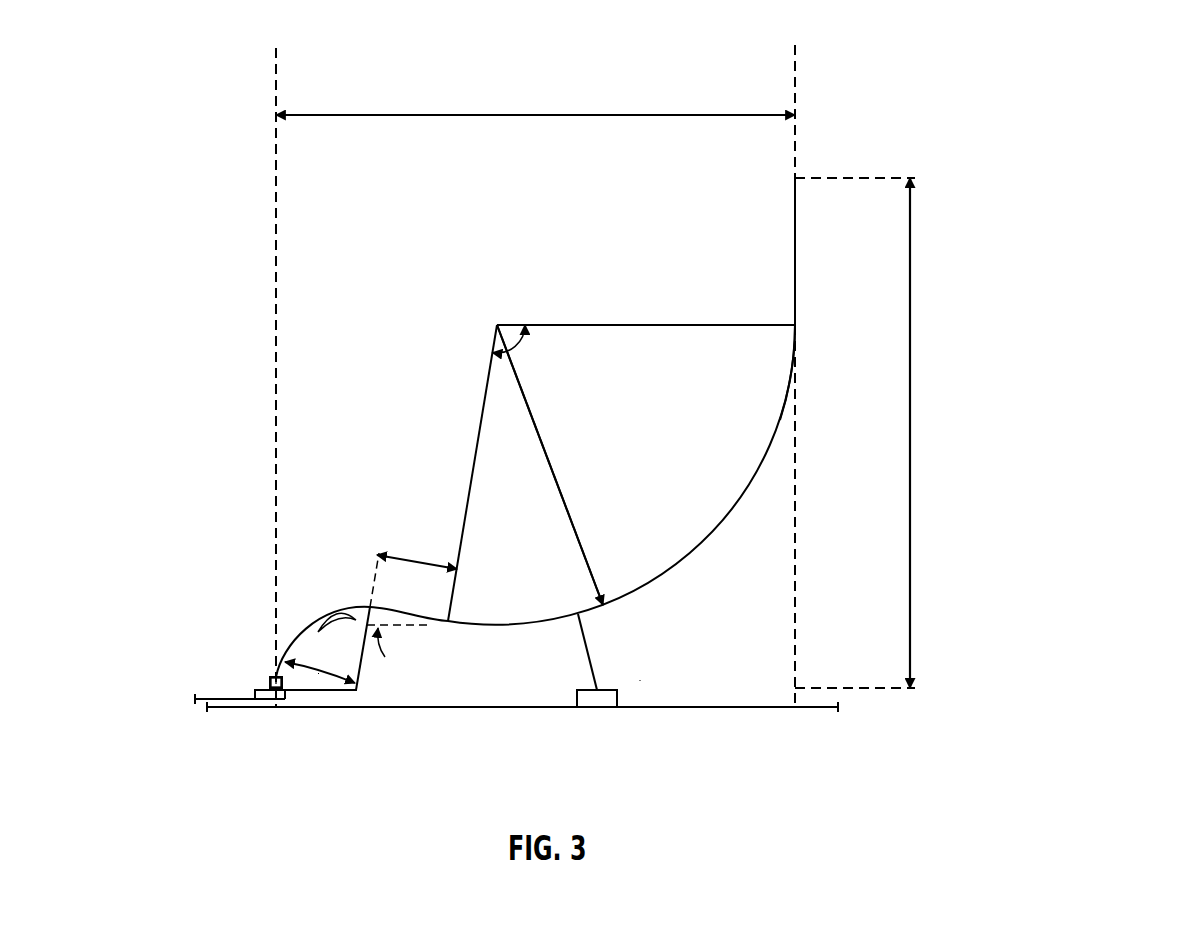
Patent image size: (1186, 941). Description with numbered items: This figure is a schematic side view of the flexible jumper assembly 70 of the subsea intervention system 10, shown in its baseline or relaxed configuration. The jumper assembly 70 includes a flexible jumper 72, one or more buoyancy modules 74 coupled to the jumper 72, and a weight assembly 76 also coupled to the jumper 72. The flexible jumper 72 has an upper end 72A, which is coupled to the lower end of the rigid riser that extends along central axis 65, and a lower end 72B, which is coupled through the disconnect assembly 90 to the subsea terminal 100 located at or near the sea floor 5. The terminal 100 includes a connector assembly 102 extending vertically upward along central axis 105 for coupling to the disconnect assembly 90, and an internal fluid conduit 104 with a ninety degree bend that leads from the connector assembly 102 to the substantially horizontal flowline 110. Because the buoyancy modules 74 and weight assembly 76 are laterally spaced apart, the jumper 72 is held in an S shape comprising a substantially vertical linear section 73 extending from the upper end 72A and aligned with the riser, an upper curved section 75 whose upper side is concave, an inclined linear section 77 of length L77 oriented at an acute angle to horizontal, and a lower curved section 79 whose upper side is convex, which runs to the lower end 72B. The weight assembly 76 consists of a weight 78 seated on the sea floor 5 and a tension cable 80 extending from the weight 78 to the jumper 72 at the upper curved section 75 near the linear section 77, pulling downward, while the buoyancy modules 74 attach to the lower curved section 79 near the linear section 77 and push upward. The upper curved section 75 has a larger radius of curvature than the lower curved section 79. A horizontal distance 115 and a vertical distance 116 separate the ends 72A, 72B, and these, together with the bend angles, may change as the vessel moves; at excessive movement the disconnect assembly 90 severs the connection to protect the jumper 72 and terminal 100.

The sea floor 5 is at (745, 707).
The system 10 is at (380, 327).
The central axis 65 is at (797, 82).
The jumper assembly 70 is at (790, 402).
The flexible jumper 72 is at (797, 358).
The upper end of flexible jumper 72A is at (797, 178).
The lower end of flexible jumper 72B is at (273, 673).
The linear section 73 is at (800, 237).
The buoyancy modules 74 is at (397, 575).
The upper curved section 75 is at (696, 556).
The weight assembly 76 is at (638, 677).
The linear section 77 is at (427, 620).
The weight 78 is at (588, 695).
The lower curved section 79 is at (310, 618).
The tension cable 80 is at (585, 650).
The disconnect assembly 90 is at (209, 662).
The subsea terminal 100 is at (257, 690).
The connector assembly 102 is at (258, 670).
The internal fluid conduit 104 is at (277, 690).
The central axis 105 is at (276, 82).
The flowline 110 is at (240, 700).
The horizontal distance 115 is at (535, 113).
The vertical distance 116 is at (910, 432).
The length of linear section L77 is at (417, 560).